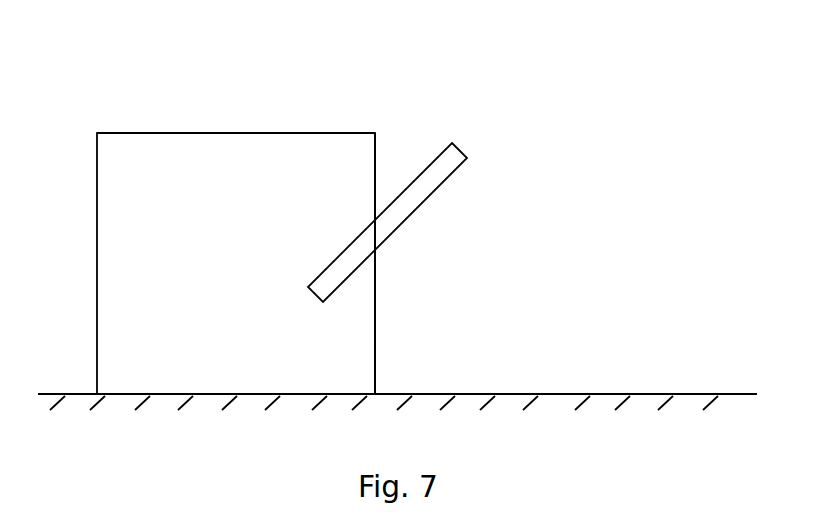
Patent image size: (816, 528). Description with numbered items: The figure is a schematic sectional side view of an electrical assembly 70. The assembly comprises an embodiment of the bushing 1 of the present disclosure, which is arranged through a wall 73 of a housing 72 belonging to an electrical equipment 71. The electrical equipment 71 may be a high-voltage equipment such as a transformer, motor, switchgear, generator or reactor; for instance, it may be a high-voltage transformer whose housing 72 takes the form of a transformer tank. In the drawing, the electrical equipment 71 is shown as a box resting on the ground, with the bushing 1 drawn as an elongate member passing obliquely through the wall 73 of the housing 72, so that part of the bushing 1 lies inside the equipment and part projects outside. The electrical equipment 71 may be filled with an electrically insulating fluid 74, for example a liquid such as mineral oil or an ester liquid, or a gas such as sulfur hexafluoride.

The bushing 1 is at (445, 165).
The electrical assembly 70 is at (540, 124).
The electrical equipment 71 is at (236, 263).
The housing 72 is at (358, 133).
The wall 73 is at (375, 302).
The electrically insulating fluid 74 is at (362, 362).